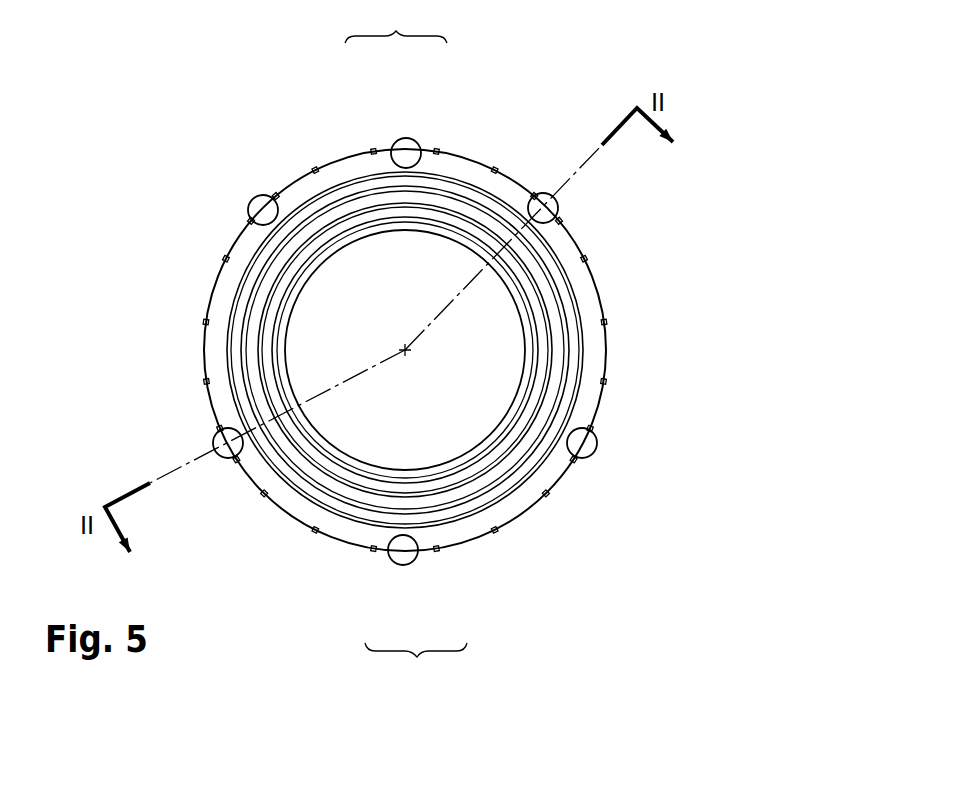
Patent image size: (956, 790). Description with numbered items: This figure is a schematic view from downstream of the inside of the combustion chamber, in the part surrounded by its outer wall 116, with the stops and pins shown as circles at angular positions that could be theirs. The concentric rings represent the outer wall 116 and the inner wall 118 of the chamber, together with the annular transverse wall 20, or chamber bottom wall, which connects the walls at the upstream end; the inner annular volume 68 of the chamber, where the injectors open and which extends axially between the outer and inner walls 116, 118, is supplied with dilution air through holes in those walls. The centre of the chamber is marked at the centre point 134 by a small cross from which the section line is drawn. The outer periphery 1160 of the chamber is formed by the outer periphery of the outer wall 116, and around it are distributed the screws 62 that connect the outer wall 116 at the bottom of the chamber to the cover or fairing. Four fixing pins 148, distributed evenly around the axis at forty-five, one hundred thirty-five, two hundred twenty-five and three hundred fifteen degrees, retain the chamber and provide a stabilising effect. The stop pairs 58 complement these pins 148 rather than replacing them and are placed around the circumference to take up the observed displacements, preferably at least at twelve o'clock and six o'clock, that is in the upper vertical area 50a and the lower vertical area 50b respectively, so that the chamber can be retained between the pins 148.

The annular transverse wall 20 is at (473, 177).
The upper vertical area 50a is at (396, 23).
The lower vertical area 50b is at (416, 667).
The stop pair 58 is at (425, 134).
The screw 62 is at (373, 146).
The inner annular volume 68 is at (470, 312).
The outer wall 116 is at (203, 357).
The inner wall 118 is at (330, 218).
The central axis 134 is at (402, 350).
The fixing pin 148 is at (262, 208).
The outer periphery 1160 is at (217, 275).